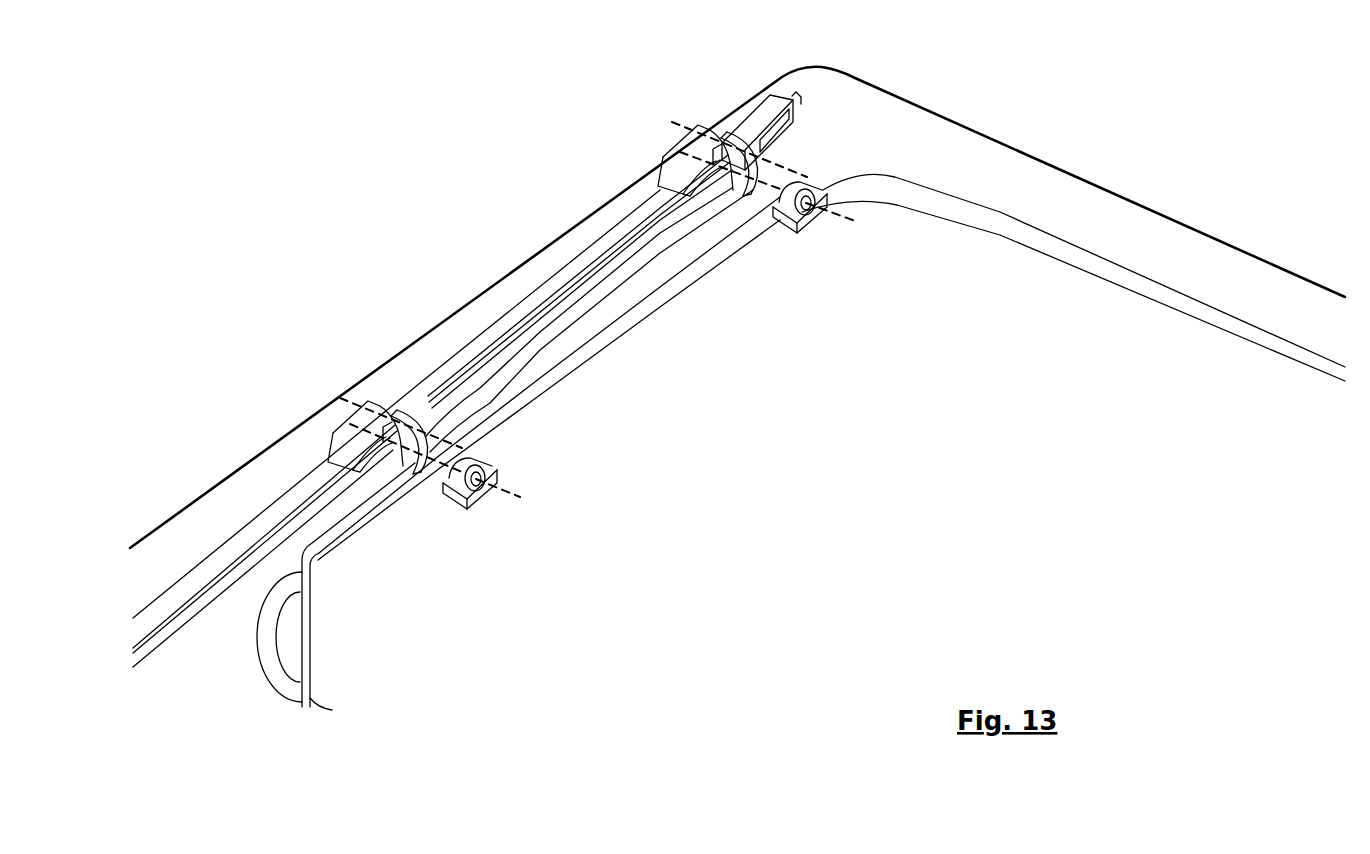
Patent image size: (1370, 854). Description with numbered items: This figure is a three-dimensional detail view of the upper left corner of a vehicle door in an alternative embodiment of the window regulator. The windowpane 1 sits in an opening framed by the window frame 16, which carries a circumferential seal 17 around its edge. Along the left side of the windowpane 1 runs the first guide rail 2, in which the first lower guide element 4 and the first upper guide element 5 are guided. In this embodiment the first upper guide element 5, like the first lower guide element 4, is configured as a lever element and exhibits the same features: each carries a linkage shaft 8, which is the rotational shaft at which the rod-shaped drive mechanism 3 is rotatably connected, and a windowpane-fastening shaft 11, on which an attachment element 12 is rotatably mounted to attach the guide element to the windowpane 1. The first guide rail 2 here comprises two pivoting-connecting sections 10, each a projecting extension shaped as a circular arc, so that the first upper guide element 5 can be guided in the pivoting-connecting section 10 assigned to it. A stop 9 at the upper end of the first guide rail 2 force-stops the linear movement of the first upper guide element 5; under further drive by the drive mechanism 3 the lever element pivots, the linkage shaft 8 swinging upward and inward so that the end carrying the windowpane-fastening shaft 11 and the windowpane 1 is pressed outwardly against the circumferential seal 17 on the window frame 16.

The windowpane 1 is at (737, 307).
The first guide rail 2 is at (560, 276).
The drive mechanism 3 is at (314, 611).
The first lower guide element 4 is at (403, 410).
The first upper guide element 5 is at (737, 135).
The linkage shaft 8 is at (555, 291).
The stop 9 is at (802, 122).
The pivoting-connecting section 10 is at (330, 441).
The windowpane-fastening shaft 11 is at (687, 360).
The attachment element 12 is at (470, 502).
The window frame 16 is at (1027, 200).
The circumferential seal 17 is at (1082, 246).